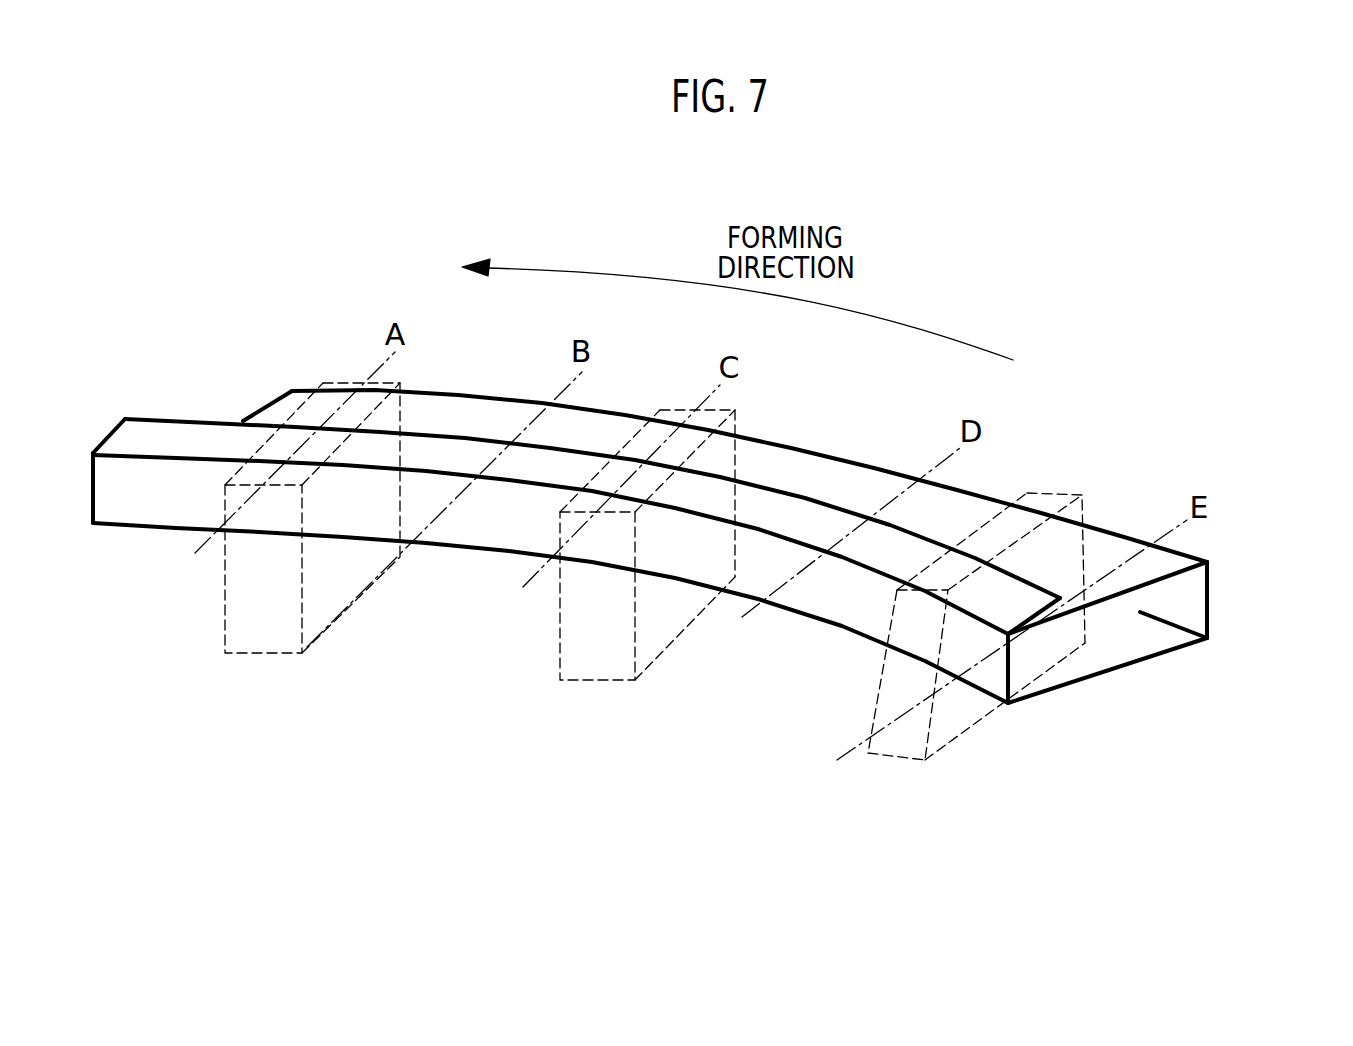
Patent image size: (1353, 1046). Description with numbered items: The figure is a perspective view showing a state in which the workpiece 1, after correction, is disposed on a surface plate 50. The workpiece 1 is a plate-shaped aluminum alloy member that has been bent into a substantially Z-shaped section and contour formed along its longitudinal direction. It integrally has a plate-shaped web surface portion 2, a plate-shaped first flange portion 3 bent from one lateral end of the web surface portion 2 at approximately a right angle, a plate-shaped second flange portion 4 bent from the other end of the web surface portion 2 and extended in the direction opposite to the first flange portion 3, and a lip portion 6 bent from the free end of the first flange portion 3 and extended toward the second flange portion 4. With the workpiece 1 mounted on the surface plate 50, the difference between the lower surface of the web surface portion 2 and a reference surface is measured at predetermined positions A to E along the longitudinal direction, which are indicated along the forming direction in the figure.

The workpiece 1 is at (707, 589).
The web surface portion 2 is at (1105, 640).
The first flange portion 3 is at (1010, 666).
The second flange portion 4 is at (1209, 586).
The lip portion 6 is at (1030, 608).
The surface plate 50 is at (258, 632).